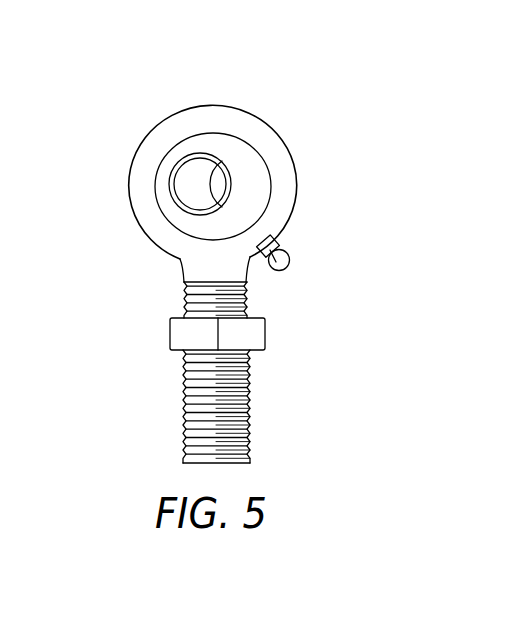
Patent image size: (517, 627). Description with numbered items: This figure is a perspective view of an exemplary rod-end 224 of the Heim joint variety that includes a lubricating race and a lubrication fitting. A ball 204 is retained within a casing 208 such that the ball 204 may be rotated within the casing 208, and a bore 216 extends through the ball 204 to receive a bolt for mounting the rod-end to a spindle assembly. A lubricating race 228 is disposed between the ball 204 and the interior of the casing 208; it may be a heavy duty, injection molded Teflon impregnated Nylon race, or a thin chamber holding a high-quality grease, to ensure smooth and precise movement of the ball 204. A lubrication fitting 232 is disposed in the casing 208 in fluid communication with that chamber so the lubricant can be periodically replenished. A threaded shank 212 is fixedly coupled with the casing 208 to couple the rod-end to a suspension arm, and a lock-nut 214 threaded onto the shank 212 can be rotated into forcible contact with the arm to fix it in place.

The rod-end 224 is at (125, 108).
The casing 208 is at (257, 125).
The lubricating race 228 is at (170, 218).
The ball 204 is at (230, 192).
The bore 216 is at (185, 179).
The lubrication fitting 232 is at (288, 267).
The lock-nut 214 is at (185, 333).
The threaded shank 212 is at (247, 412).